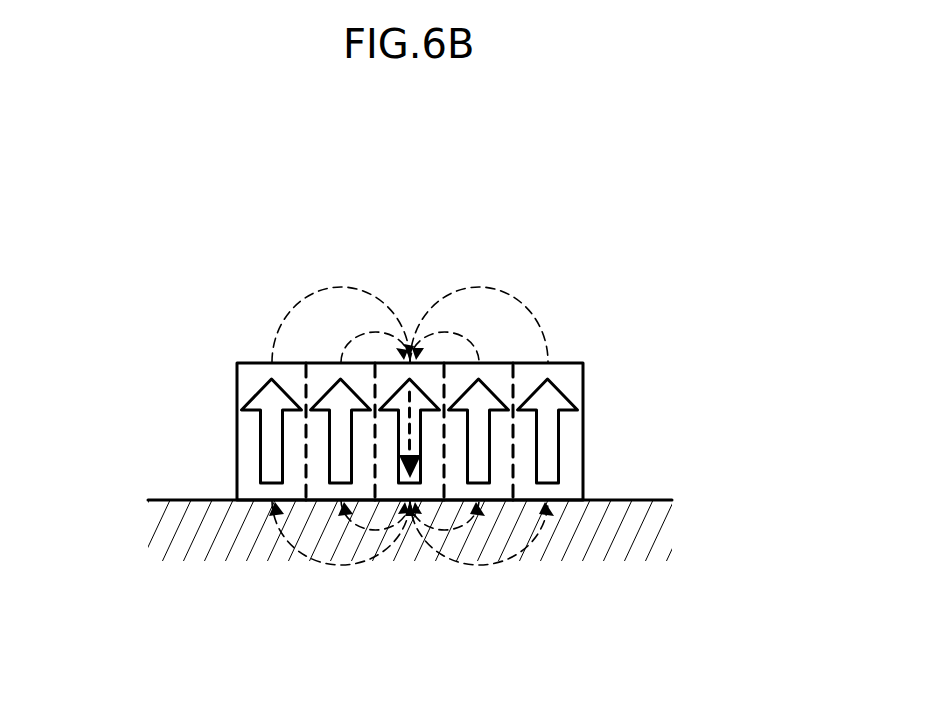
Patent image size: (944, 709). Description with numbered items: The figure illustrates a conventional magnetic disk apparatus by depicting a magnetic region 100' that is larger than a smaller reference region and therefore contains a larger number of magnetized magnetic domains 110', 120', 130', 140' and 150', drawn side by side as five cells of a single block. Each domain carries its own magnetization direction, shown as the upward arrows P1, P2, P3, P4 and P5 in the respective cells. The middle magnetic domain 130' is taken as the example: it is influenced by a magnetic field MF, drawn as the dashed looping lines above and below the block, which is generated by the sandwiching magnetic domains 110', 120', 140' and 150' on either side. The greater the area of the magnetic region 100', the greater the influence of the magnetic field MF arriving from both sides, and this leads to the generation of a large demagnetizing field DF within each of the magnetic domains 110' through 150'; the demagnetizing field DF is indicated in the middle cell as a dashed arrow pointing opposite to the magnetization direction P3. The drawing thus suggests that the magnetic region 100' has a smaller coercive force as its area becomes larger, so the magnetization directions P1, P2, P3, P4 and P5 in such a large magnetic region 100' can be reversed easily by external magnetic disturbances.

The magnetic region 100' is at (403, 430).
The magnetic domain 110' is at (226, 390).
The magnetic domain 120' is at (245, 362).
The middle magnetic domain 130' is at (416, 449).
The magnetic domain 140' is at (550, 359).
The magnetic domain 150' is at (602, 390).
The magnetization direction P1 is at (265, 432).
The magnetization direction P2 is at (335, 442).
The magnetization direction P3 is at (403, 448).
The magnetization direction P4 is at (490, 433).
The magnetization direction P5 is at (560, 467).
The magnetic field MF is at (360, 333).
The demagnetizing field DF is at (425, 433).